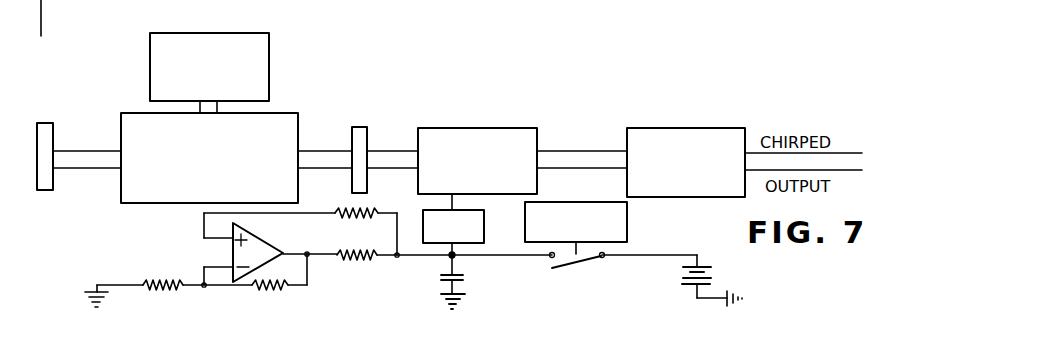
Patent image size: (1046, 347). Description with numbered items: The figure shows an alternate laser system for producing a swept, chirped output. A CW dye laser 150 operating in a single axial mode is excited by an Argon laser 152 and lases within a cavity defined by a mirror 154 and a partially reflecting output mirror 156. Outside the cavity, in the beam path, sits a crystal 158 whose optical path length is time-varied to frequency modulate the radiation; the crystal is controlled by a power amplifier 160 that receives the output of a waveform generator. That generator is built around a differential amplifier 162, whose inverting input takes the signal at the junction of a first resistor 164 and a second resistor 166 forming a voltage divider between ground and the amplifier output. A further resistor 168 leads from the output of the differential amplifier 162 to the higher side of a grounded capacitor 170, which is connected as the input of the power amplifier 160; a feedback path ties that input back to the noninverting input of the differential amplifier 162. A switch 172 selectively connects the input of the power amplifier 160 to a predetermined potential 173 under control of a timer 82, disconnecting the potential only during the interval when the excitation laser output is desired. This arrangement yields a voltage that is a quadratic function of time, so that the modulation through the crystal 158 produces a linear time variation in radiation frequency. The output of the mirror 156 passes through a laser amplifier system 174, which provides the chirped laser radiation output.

The CW dye laser 150 is at (298, 123).
The Argon laser 152 is at (270, 68).
The mirror 154 is at (70, 95).
The partially reflecting output mirror 156 is at (360, 126).
The crystal 158 is at (450, 128).
The power amplifier 160 is at (485, 214).
The differential amplifier 162 is at (255, 231).
The first resistor 164 is at (153, 280).
The second resistor 166 is at (283, 293).
The further resistor 168 is at (356, 250).
The grounded capacitor 170 is at (337, 211).
The switch 172 is at (582, 262).
The predetermined potential 173 is at (707, 278).
The laser amplifier system 174 is at (683, 128).
The timer 82 is at (628, 220).